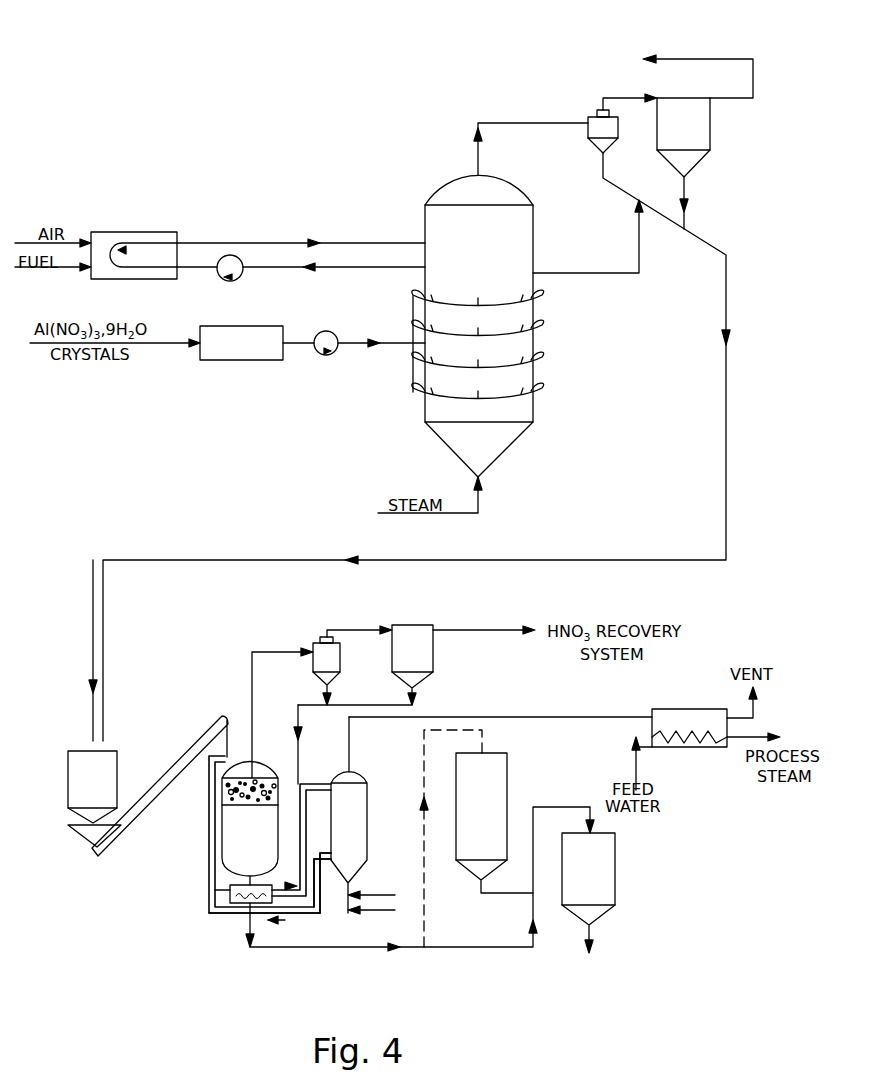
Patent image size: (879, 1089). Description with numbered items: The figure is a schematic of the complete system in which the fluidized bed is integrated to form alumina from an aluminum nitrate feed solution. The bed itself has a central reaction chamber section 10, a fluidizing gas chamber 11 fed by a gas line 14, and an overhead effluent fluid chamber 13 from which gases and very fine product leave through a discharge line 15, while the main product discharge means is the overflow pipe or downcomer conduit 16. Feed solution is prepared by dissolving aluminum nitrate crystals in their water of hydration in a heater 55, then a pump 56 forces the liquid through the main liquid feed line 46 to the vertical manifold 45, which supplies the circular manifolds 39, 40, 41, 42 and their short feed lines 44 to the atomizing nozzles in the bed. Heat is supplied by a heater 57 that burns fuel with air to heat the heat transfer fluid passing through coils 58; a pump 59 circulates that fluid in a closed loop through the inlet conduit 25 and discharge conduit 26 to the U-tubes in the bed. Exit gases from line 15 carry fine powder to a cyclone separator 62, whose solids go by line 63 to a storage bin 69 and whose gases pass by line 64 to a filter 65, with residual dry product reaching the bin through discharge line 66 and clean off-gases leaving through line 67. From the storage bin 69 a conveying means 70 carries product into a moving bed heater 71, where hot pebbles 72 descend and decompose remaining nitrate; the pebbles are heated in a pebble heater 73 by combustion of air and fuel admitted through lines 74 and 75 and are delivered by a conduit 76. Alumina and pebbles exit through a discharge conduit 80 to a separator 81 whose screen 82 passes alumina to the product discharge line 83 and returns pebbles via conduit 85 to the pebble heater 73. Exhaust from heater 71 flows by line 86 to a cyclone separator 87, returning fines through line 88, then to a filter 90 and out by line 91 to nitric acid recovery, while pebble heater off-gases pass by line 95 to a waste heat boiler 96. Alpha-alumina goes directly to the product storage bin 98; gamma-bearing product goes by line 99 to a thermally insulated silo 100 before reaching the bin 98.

The central reaction chamber section 10 is at (533, 236).
The fluidizing gas chamber 11 is at (500, 454).
The overhead effluent fluid chamber 13 is at (497, 184).
The gas line 14 is at (486, 498).
The discharge line 15 is at (475, 159).
The overflow pipe or downcomer conduit 16 is at (573, 273).
The inlet conduit 25 is at (357, 241).
The discharge conduit 26 is at (355, 269).
The circular manifold 39 is at (546, 296).
The circular manifold 40 is at (546, 326).
The circular manifold 41 is at (546, 359).
The circular manifold 42 is at (546, 390).
The short feed line 44 is at (435, 298).
The vertical manifold 45 is at (413, 303).
The main liquid feed line 46 is at (390, 346).
The heater 55 is at (258, 360).
The pump 56 is at (326, 356).
The heater 57 is at (122, 232).
The coils 58 is at (130, 258).
The pump 59 is at (233, 255).
The cyclone separator 62 is at (590, 118).
The line 63 is at (617, 194).
The line 64 is at (632, 98).
The filter 65 is at (705, 131).
The discharge line 66 is at (688, 215).
The line 67 is at (720, 59).
The storage bin 69 is at (68, 791).
The conveying means 70 is at (172, 772).
The moving bed heater 71 is at (222, 840).
The pebbles 72 is at (222, 797).
The pebble heater 73 is at (362, 834).
The line 74 is at (362, 895).
The line 75 is at (364, 911).
The conduit 76 is at (312, 913).
The discharge conduit 80 is at (209, 880).
The separator 81 is at (230, 893).
The screen 82 is at (212, 916).
The product discharge line 83 is at (292, 950).
The conduit 85 is at (300, 802).
The line 86 is at (253, 690).
The cyclone separator 87 is at (318, 649).
The line 88 is at (299, 764).
The filter 90 is at (412, 628).
The line 91 is at (458, 630).
The line 95 is at (560, 716).
The waste heat boiler 96 is at (700, 710).
The product storage bin 98 is at (610, 860).
The line 99 is at (424, 888).
The thermally insulated silo 100 is at (497, 783).